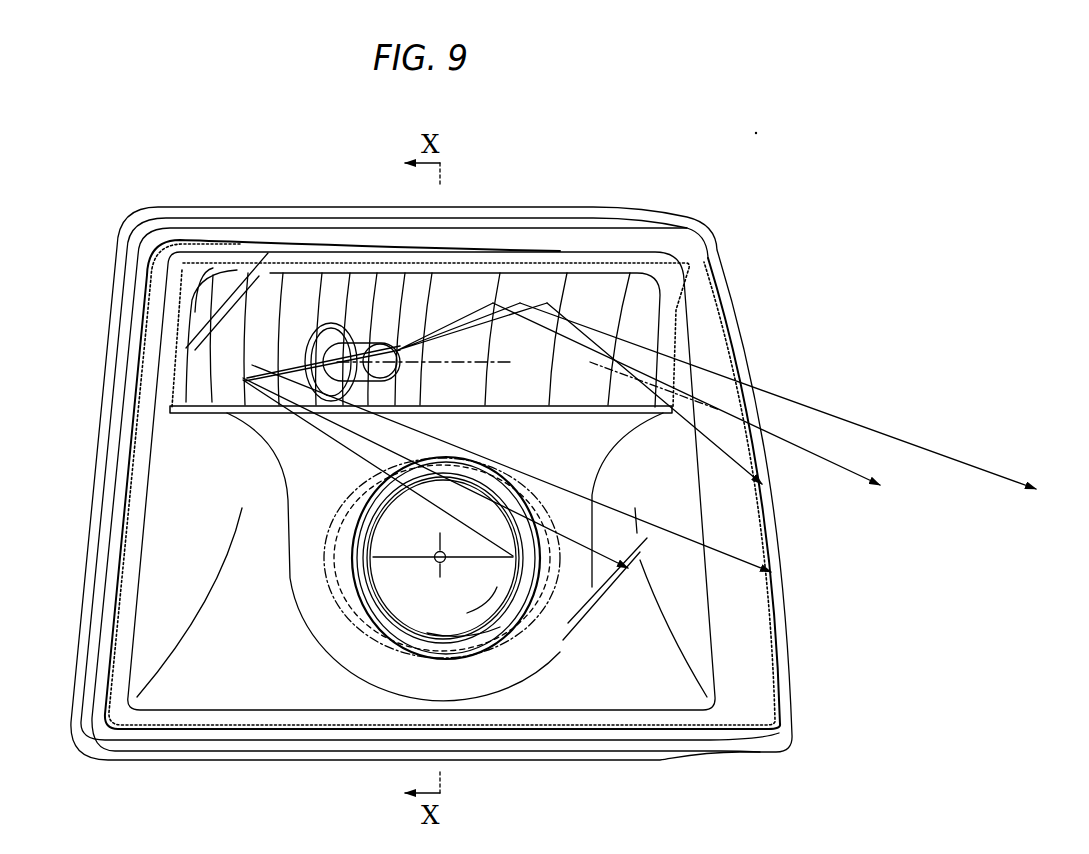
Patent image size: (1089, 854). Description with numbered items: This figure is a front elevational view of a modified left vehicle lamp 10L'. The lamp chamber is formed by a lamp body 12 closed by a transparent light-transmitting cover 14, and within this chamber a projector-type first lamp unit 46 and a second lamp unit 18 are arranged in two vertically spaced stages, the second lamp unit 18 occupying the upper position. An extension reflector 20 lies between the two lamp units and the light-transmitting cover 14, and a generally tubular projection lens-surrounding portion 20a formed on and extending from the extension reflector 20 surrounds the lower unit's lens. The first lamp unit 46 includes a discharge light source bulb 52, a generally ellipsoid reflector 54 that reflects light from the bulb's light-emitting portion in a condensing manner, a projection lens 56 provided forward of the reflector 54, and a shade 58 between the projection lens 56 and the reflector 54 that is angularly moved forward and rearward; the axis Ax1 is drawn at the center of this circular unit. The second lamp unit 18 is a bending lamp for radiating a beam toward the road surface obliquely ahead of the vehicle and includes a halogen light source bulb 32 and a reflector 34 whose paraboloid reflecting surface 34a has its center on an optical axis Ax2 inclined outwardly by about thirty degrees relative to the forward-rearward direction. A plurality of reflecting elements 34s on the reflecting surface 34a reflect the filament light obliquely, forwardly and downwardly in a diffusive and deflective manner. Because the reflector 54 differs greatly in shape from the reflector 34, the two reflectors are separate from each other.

The left vehicle lamp 10L' is at (824, 242).
The lamp body 12 is at (478, 206).
The light-transmitting cover 14 is at (526, 225).
The second lamp unit 18 is at (692, 337).
The extension reflector 20 is at (784, 628).
The projection lens-surrounding portion 20a is at (310, 474).
The light source bulb 32 is at (383, 337).
The reflector 34 is at (168, 290).
The reflecting surface 34a is at (637, 298).
The reflecting elements 34s is at (363, 278).
The first lamp unit 46 is at (542, 478).
The light source bulb 52 is at (428, 540).
The reflector 54 is at (318, 567).
The projection lens 56 is at (368, 596).
The shade 58 is at (375, 549).
The first axis Ax1 is at (437, 570).
The optical axis Ax2 is at (509, 368).